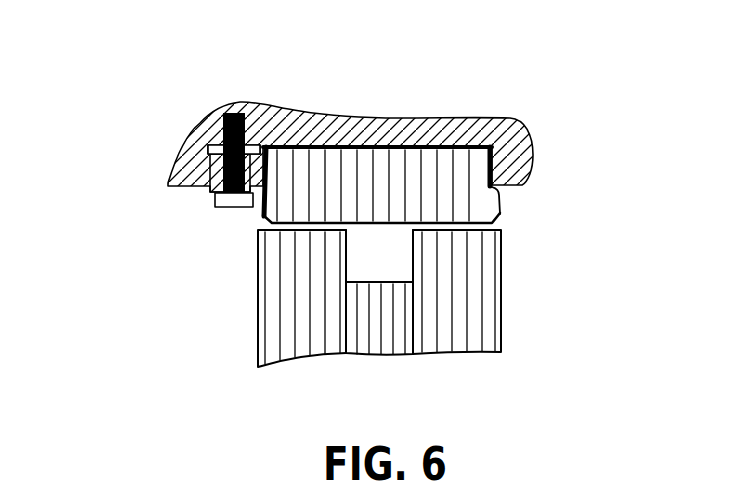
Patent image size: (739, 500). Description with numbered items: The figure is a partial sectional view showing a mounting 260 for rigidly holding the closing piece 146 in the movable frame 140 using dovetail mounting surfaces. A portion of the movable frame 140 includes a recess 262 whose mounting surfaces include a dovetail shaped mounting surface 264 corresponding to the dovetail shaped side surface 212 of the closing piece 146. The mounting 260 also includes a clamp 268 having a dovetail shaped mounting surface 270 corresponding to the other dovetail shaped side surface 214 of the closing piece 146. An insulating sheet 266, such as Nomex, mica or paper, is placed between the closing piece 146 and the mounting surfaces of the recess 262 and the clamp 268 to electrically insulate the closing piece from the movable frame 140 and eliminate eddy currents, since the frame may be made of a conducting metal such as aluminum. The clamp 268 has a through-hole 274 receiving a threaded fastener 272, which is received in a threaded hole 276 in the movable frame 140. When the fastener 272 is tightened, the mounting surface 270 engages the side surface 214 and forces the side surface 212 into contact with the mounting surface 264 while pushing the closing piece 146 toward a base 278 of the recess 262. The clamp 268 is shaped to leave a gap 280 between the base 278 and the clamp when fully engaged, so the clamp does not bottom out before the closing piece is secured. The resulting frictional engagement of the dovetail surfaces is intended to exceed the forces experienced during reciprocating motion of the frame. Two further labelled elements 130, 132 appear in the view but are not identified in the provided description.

The right honeycomb core section 130 is at (482, 299).
The left honeycomb core section 132 is at (283, 308).
The movable frame 140 is at (508, 120).
The closing piece 146 is at (386, 170).
The dovetail shaped side surface 212 is at (525, 132).
The dovetail shaped side surface 214 is at (289, 148).
The mounting 260 is at (188, 148).
The recess 262 is at (208, 150).
The dovetail shaped mounting surface 264 is at (483, 160).
The insulating sheet 266 is at (486, 190).
The clamp 268 is at (235, 216).
The dovetail shaped mounting surface 270 is at (251, 150).
The threaded fastener 272 is at (215, 203).
The through-hole 274 is at (207, 179).
The threaded hole 276 is at (218, 126).
The base 278 is at (260, 150).
The gap 280 is at (210, 159).